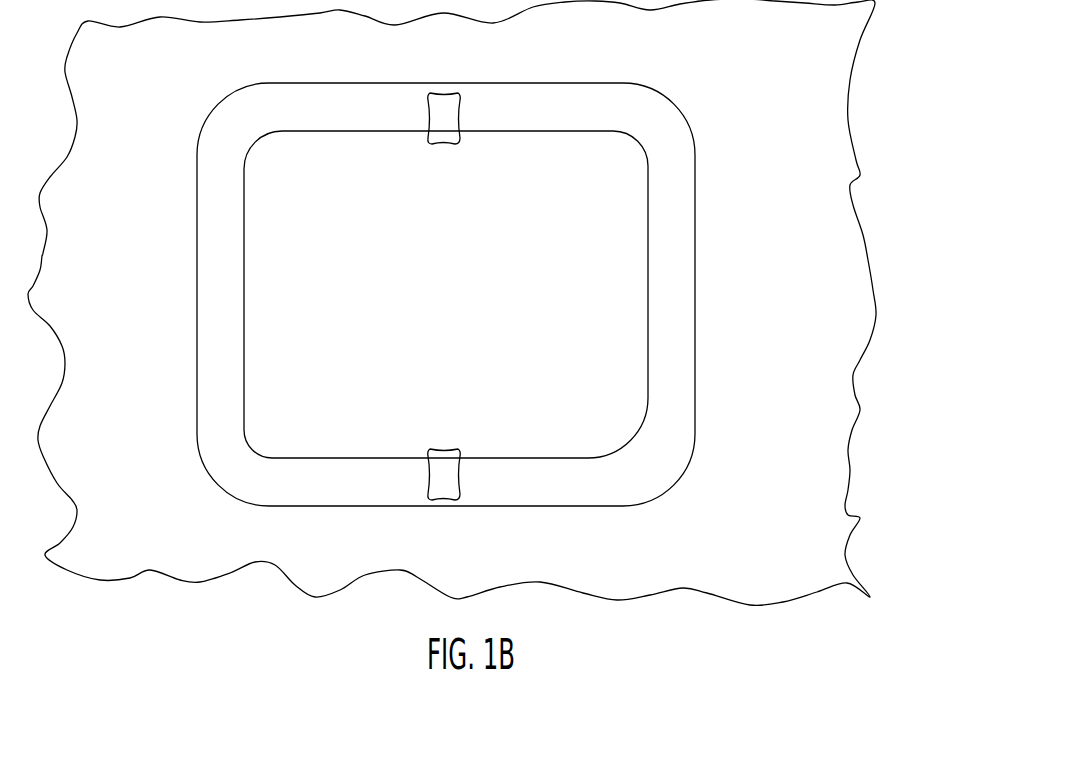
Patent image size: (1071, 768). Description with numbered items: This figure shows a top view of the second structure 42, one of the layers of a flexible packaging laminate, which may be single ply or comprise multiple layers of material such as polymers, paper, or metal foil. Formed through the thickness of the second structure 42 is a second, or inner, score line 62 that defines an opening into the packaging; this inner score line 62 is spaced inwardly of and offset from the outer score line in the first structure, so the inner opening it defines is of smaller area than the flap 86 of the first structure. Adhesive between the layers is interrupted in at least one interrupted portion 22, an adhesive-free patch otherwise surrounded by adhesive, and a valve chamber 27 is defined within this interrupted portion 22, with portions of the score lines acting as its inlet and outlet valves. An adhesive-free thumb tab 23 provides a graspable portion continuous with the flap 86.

The interrupted portion 22 is at (447, 88).
The valve chamber 27 is at (455, 127).
The flap 86 is at (468, 301).
The second score line 62 is at (648, 363).
The thumb tab 23 is at (660, 474).
The second structure 42 is at (830, 296).